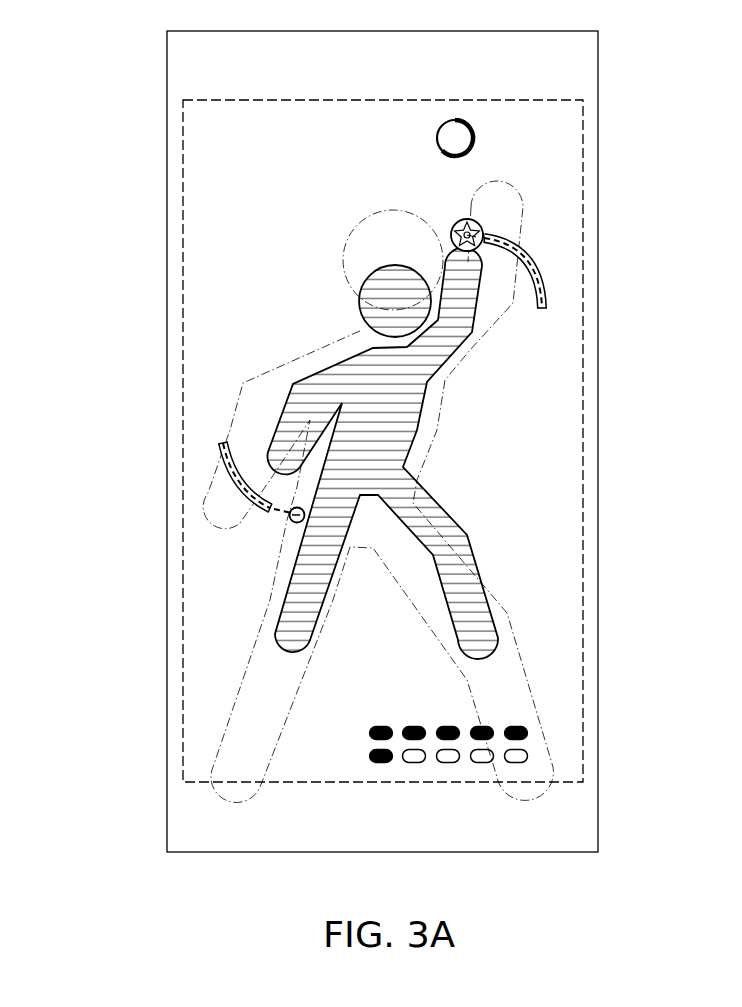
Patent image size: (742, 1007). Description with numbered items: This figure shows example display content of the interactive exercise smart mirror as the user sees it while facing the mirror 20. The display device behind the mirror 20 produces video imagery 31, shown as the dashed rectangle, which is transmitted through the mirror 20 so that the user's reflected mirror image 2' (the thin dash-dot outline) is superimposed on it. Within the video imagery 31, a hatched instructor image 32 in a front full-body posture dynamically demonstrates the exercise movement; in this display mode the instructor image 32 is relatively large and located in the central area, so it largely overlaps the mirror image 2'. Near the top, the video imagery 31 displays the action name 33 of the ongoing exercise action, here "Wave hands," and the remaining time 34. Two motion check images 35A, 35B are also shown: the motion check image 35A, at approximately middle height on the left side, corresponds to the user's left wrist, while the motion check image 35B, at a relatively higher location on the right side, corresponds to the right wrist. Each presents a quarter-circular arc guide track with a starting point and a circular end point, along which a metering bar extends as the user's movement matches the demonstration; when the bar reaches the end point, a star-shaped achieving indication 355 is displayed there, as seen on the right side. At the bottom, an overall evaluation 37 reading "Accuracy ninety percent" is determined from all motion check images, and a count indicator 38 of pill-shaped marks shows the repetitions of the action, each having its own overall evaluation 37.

The mirror 20 is at (167, 72).
The video imagery 31 is at (182, 242).
The action name 33 is at (198, 140).
The remaining time 34 is at (570, 138).
The mirror image 2' is at (318, 492).
The instructor image 32 is at (427, 422).
The motion check image 35A is at (186, 532).
The motion check image 35B is at (578, 266).
The achieving indication 355 is at (480, 227).
The overall evaluation 37 is at (248, 760).
The count indicator 38 is at (533, 745).